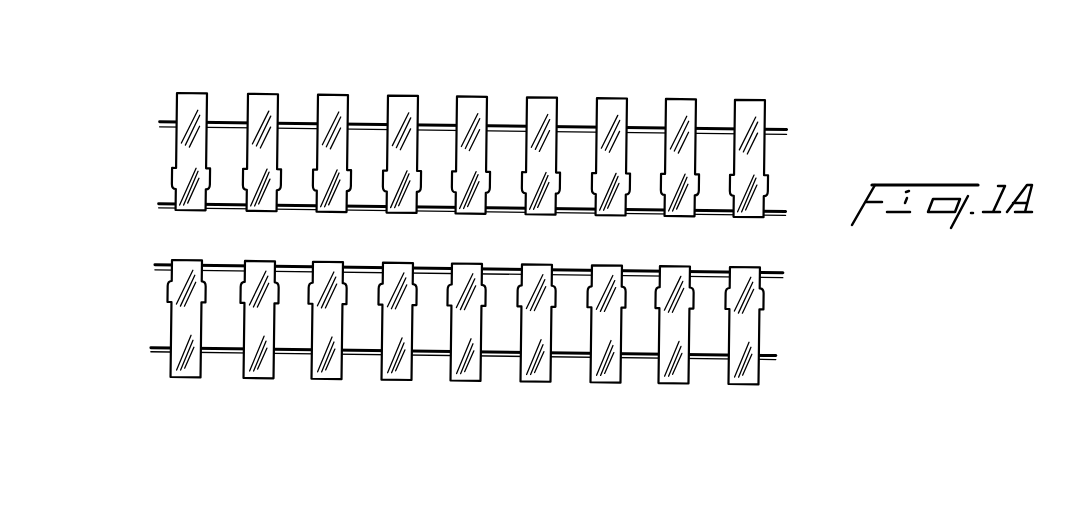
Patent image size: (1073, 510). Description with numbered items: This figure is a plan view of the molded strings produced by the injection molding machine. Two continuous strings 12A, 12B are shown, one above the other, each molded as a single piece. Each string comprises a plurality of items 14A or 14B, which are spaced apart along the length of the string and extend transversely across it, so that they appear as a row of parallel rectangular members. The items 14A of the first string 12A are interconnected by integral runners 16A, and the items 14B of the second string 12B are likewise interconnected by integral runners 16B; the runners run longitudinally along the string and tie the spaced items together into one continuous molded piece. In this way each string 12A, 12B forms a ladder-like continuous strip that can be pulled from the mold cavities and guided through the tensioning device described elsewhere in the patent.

The continuous string 12A is at (524, 151).
The continuous string 12B is at (466, 341).
The item 14A is at (688, 103).
The item 14B is at (748, 328).
The runner 16A is at (641, 128).
The runner 16B is at (361, 268).